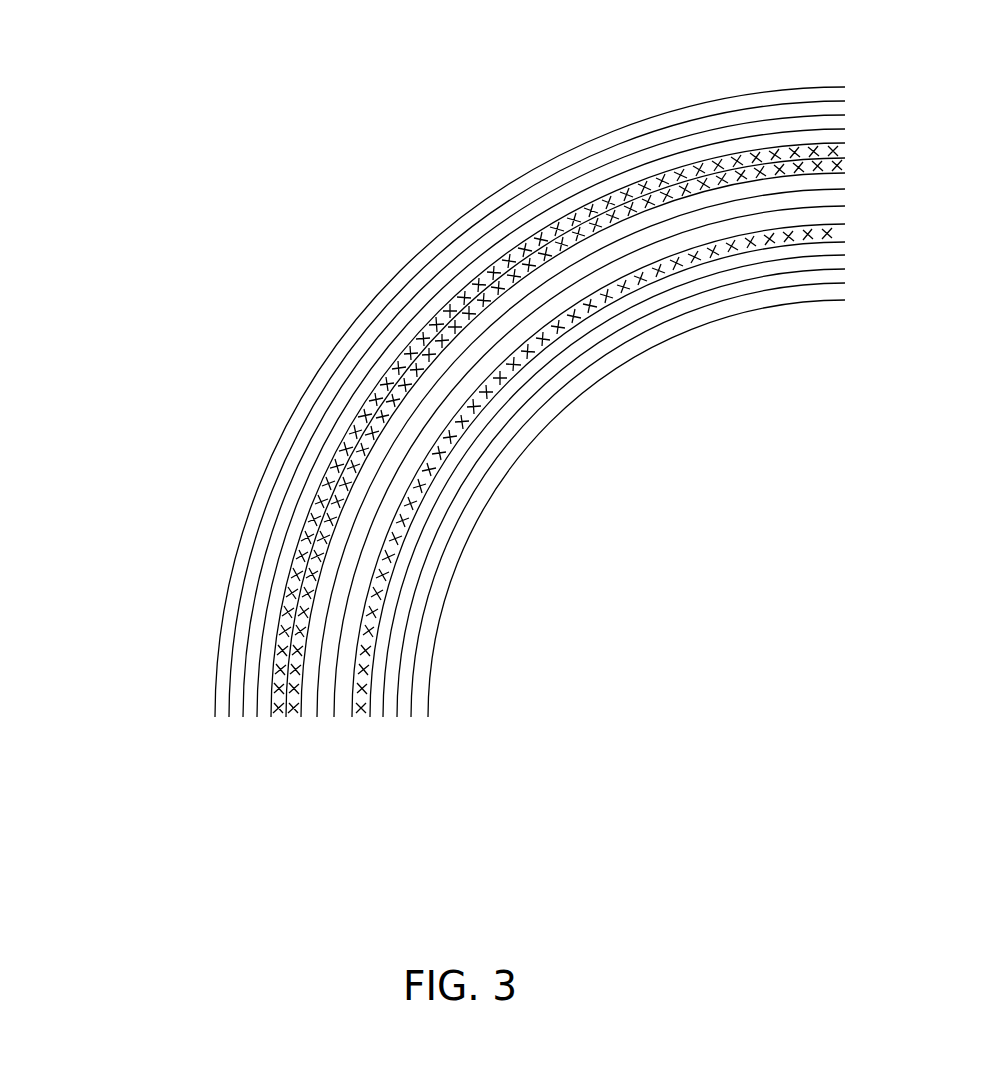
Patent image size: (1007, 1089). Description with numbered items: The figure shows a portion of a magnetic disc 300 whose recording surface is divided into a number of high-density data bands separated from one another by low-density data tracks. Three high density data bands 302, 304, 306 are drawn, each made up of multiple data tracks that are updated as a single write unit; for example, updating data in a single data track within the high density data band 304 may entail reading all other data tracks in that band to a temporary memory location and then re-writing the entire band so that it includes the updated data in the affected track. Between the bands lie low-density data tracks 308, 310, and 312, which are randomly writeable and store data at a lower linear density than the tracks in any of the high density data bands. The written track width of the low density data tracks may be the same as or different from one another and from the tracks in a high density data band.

The magnetic disc 300 is at (117, 68).
The high density data band 302 is at (270, 719).
The high density data band 304 is at (350, 719).
The high density data band 306 is at (430, 719).
The low-density data track 308 is at (280, 663).
The low-density data track 310 is at (293, 692).
The low-density data track 312 is at (363, 655).